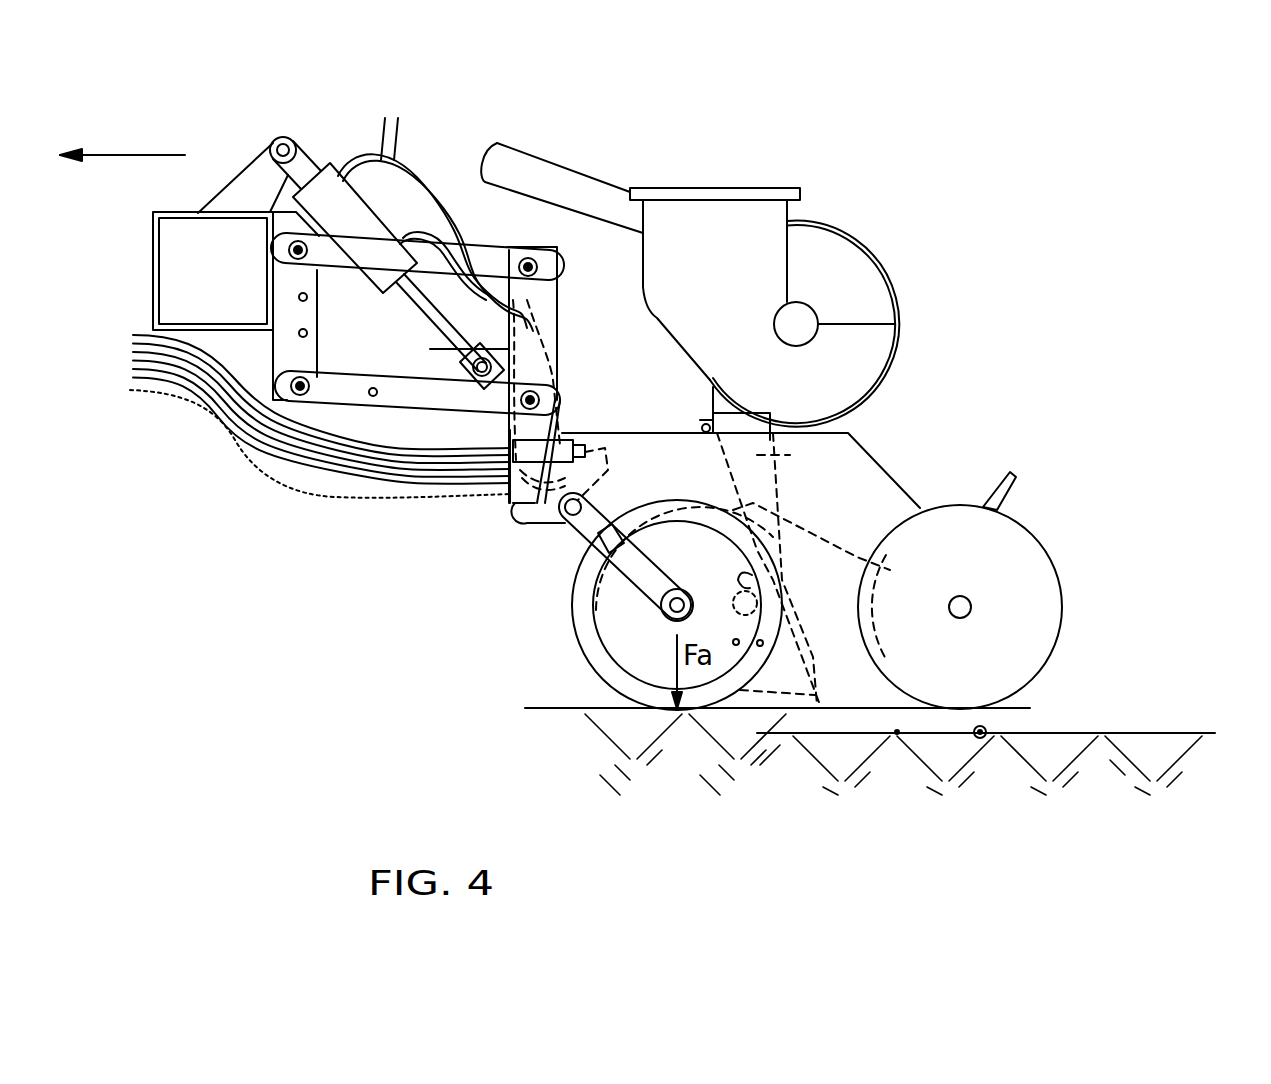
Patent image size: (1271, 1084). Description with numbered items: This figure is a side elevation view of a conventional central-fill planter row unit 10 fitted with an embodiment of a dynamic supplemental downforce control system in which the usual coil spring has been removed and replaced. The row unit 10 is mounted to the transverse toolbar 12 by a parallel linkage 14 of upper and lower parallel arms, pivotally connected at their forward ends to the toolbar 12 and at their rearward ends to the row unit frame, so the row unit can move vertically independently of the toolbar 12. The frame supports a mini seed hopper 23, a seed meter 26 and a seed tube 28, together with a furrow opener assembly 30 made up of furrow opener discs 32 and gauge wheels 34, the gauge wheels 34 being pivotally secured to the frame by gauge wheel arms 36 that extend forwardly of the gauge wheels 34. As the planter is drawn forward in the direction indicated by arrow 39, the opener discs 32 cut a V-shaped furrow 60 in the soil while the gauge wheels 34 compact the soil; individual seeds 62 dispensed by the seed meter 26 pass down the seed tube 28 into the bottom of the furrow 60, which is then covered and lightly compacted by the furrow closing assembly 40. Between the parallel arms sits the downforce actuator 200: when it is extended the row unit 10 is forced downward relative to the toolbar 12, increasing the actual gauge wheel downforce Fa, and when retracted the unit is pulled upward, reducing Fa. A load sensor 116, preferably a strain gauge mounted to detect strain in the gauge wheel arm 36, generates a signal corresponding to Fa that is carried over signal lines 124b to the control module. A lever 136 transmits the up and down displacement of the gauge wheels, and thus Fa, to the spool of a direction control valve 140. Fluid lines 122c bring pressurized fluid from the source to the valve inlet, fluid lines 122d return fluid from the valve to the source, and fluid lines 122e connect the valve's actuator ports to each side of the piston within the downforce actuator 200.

The row unit 10 is at (1053, 173).
The transverse toolbar 12 is at (153, 268).
The parallel linkage 14 is at (351, 362).
The mini seed hopper 23 is at (688, 303).
The seed meter 26 is at (853, 262).
The seed tube 28 is at (848, 435).
The furrow opener assembly 30 is at (556, 656).
The furrow opener discs 32 is at (645, 652).
The gauge wheels 34 is at (583, 622).
The gauge wheel arms 36 is at (592, 580).
The arrow indicating direction of travel 39 is at (100, 156).
The furrow closing assembly 40 is at (1078, 508).
The V-shaped furrow 60 is at (873, 723).
The seeds 62 is at (975, 740).
The load sensor 116 is at (566, 540).
The fluid lines 122c is at (320, 458).
The fluid lines 122d is at (263, 458).
The fluid lines 122e is at (389, 120).
The signal lines 124b is at (447, 502).
The lever 136 is at (603, 460).
The direction control valve 140 is at (563, 425).
The downforce actuator 200 is at (319, 124).